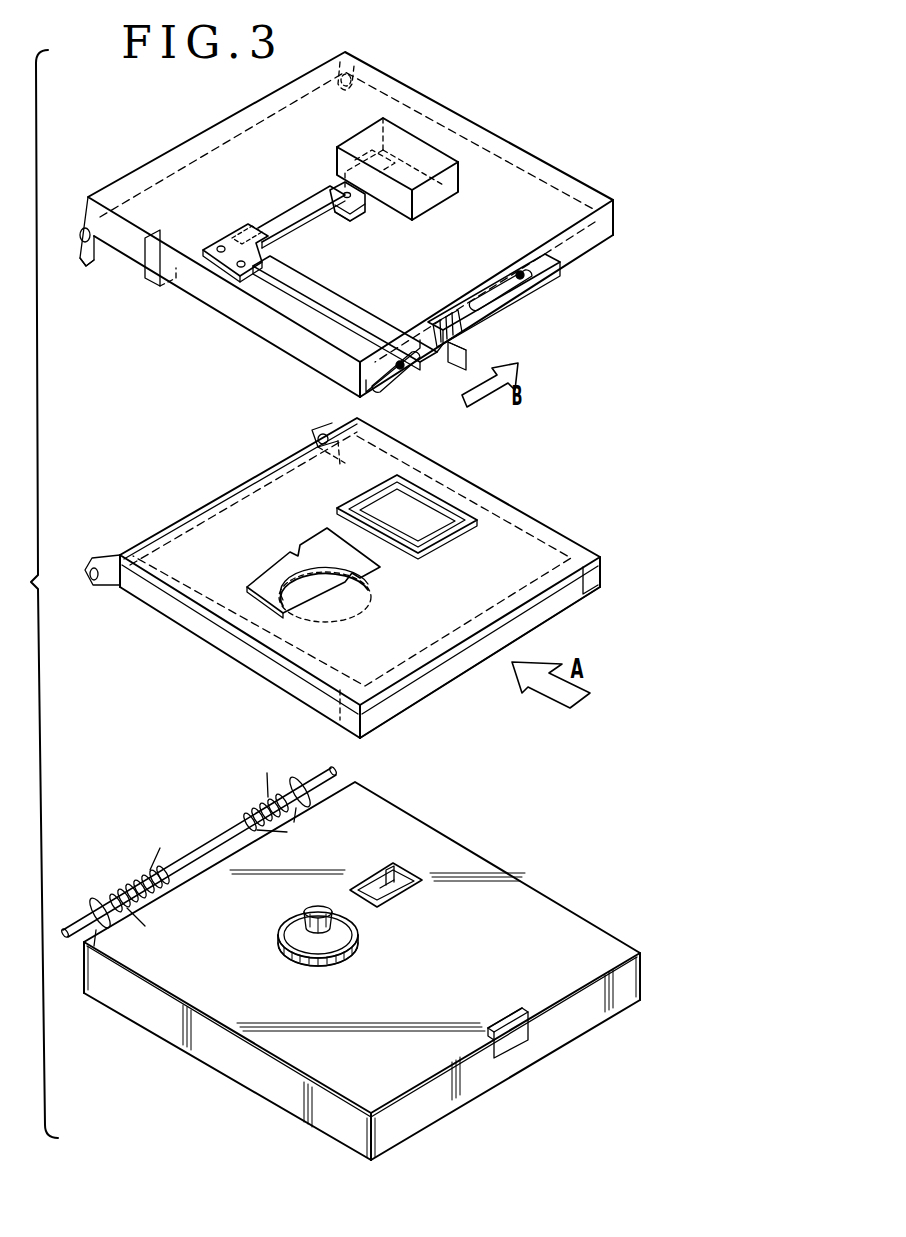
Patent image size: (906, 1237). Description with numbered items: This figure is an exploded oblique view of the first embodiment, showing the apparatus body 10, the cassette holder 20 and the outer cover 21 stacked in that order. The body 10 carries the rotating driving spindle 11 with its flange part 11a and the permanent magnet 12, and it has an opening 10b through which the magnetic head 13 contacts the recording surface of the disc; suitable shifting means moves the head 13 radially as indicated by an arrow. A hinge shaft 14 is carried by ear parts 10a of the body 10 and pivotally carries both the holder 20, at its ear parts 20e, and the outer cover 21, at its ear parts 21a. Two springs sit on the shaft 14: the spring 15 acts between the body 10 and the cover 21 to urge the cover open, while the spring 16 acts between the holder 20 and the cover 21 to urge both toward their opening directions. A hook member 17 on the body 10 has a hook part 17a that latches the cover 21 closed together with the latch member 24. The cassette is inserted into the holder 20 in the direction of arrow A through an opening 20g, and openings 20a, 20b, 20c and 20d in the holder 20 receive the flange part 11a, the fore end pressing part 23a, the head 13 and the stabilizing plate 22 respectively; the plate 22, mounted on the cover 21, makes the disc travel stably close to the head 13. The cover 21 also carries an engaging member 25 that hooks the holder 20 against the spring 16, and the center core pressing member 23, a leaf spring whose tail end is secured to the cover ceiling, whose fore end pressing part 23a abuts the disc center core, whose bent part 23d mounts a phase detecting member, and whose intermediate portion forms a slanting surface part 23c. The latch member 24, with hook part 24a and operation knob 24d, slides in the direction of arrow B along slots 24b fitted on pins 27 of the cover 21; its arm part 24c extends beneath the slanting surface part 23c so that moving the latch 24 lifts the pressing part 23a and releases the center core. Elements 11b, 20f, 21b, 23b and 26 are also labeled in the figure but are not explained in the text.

The apparatus body 10 is at (545, 913).
The ear parts 10a is at (95, 906).
The opening 10b is at (385, 901).
The rotating driving spindle 11 is at (305, 912).
The flange part 11a is at (350, 949).
The gear plate 11b is at (280, 931).
The permanent magnet 12 is at (310, 961).
The magnetic head 13 is at (395, 866).
The hinge shaft 14 is at (338, 777).
The spring 15 is at (150, 862).
The spring 16 is at (262, 806).
The hook member 17 is at (528, 1033).
The hook part 17a is at (500, 1023).
The cassette holder 20 is at (360, 581).
The opening 20a is at (300, 591).
The opening 20b is at (300, 549).
The opening 20c is at (450, 512).
The opening 20d is at (430, 492).
The ear parts 20e is at (322, 435).
The plate edge 20f is at (240, 487).
The opening 20g is at (445, 692).
The outer cover 21 is at (512, 160).
The ear parts 21a is at (352, 74).
The notch 21b is at (84, 268).
The stabilizing plate 22 is at (420, 148).
The center core pressing member 23 is at (283, 239).
The fore end pressing part 23a is at (355, 224).
The lever arm 23b is at (300, 210).
The slanting surface part 23c is at (215, 262).
The bent part 23d is at (343, 194).
The latch member 24 is at (406, 328).
The hook part 24a is at (470, 350).
The slots 24b is at (500, 287).
The arm part 24c is at (300, 290).
The operation knob 24d is at (440, 327).
The engaging member 25 is at (150, 275).
The holes 26 is at (218, 247).
The pins 27 is at (525, 285).